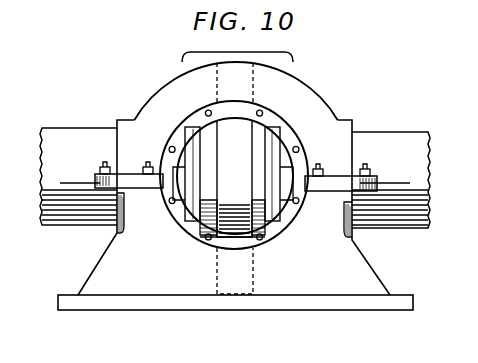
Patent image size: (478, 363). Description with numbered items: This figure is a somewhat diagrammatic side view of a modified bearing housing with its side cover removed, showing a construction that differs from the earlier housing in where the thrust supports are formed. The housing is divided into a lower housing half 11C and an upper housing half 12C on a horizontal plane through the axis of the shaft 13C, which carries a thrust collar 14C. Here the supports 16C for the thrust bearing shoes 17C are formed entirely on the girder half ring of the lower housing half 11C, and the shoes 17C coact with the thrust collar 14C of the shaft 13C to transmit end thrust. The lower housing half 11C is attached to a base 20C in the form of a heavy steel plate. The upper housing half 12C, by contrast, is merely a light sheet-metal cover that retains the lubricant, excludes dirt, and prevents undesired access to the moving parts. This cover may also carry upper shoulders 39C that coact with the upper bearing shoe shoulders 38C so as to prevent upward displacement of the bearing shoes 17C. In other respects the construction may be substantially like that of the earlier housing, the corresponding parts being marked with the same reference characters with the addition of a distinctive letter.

The lower housing half 11C is at (72, 294).
The upper housing half 12C is at (140, 70).
The shaft 13C is at (410, 138).
The thrust collar 14C is at (236, 204).
The supports 16C is at (296, 148).
The thrust bearing shoes 17C is at (260, 161).
The base 20C is at (226, 303).
The bearing shoe shoulders 38C is at (277, 133).
The upper shoulders 39C is at (195, 135).